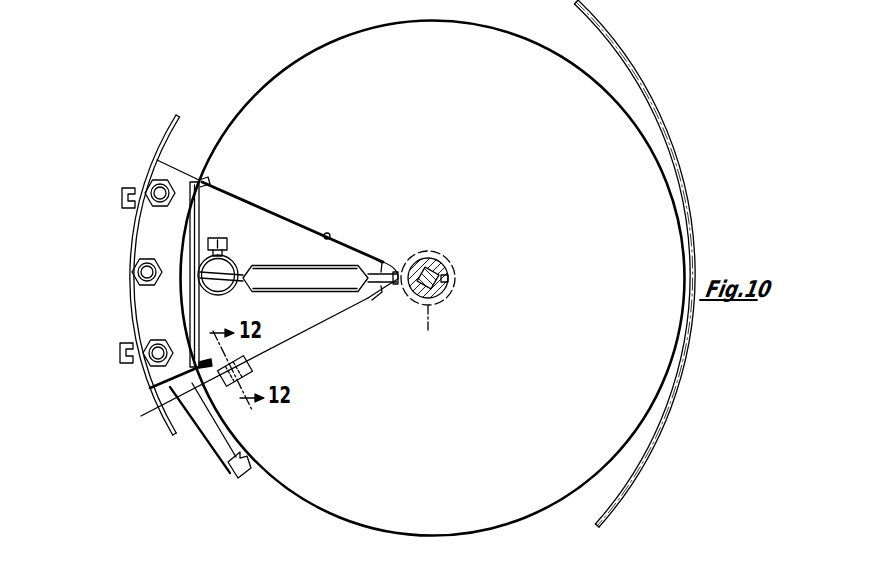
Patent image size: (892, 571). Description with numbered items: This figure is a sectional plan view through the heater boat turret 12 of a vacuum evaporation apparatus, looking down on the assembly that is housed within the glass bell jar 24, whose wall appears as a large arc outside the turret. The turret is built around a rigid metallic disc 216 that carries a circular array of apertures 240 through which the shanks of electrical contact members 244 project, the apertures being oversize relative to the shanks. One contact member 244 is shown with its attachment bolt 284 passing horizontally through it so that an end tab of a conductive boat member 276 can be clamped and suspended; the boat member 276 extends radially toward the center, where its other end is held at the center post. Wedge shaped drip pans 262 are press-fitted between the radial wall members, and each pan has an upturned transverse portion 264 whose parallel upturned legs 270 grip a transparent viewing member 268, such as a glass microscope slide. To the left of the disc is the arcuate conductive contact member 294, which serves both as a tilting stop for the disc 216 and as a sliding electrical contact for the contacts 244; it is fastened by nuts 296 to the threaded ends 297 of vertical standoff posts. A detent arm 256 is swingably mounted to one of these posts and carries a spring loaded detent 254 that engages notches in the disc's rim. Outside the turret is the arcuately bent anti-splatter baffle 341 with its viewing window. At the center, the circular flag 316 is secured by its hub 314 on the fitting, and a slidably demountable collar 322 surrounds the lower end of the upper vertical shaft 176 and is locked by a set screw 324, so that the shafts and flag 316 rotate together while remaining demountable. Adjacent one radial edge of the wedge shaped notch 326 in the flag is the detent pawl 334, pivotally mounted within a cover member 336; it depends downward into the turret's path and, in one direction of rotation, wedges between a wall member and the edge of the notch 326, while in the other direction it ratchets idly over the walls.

The heater boat turret 12 is at (267, 82).
The glass bell jar 24 is at (650, 98).
The anti-splatter baffle 341 is at (170, 128).
The arcuate conductive contact member 294 is at (135, 240).
The transparent viewing member 268 is at (186, 307).
The rigid metallic disc 216 is at (186, 247).
The upturned transverse portion 264 is at (185, 295).
The nuts 296 is at (148, 184).
The threaded ends 297 is at (130, 203).
The wedge shaped drip pan 262 is at (357, 258).
The parallel upturned legs 270 is at (200, 216).
The wedge shaped notch 326 is at (328, 233).
The apertures 240 is at (236, 292).
The electrical contact member 244 is at (232, 270).
The attachment bolt 284 is at (223, 240).
The conductive boat member 276 is at (331, 293).
The upper vertical shaft 176 is at (437, 262).
The slidably demountable collar 322 is at (441, 293).
The set screw 324 is at (449, 280).
The hub 314 is at (442, 333).
The detent pawl 334 is at (252, 368).
The cover member 336 is at (141, 424).
The detent arm 256 is at (212, 455).
The spring loaded detent 254 is at (248, 458).
The flag 316 is at (456, 438).